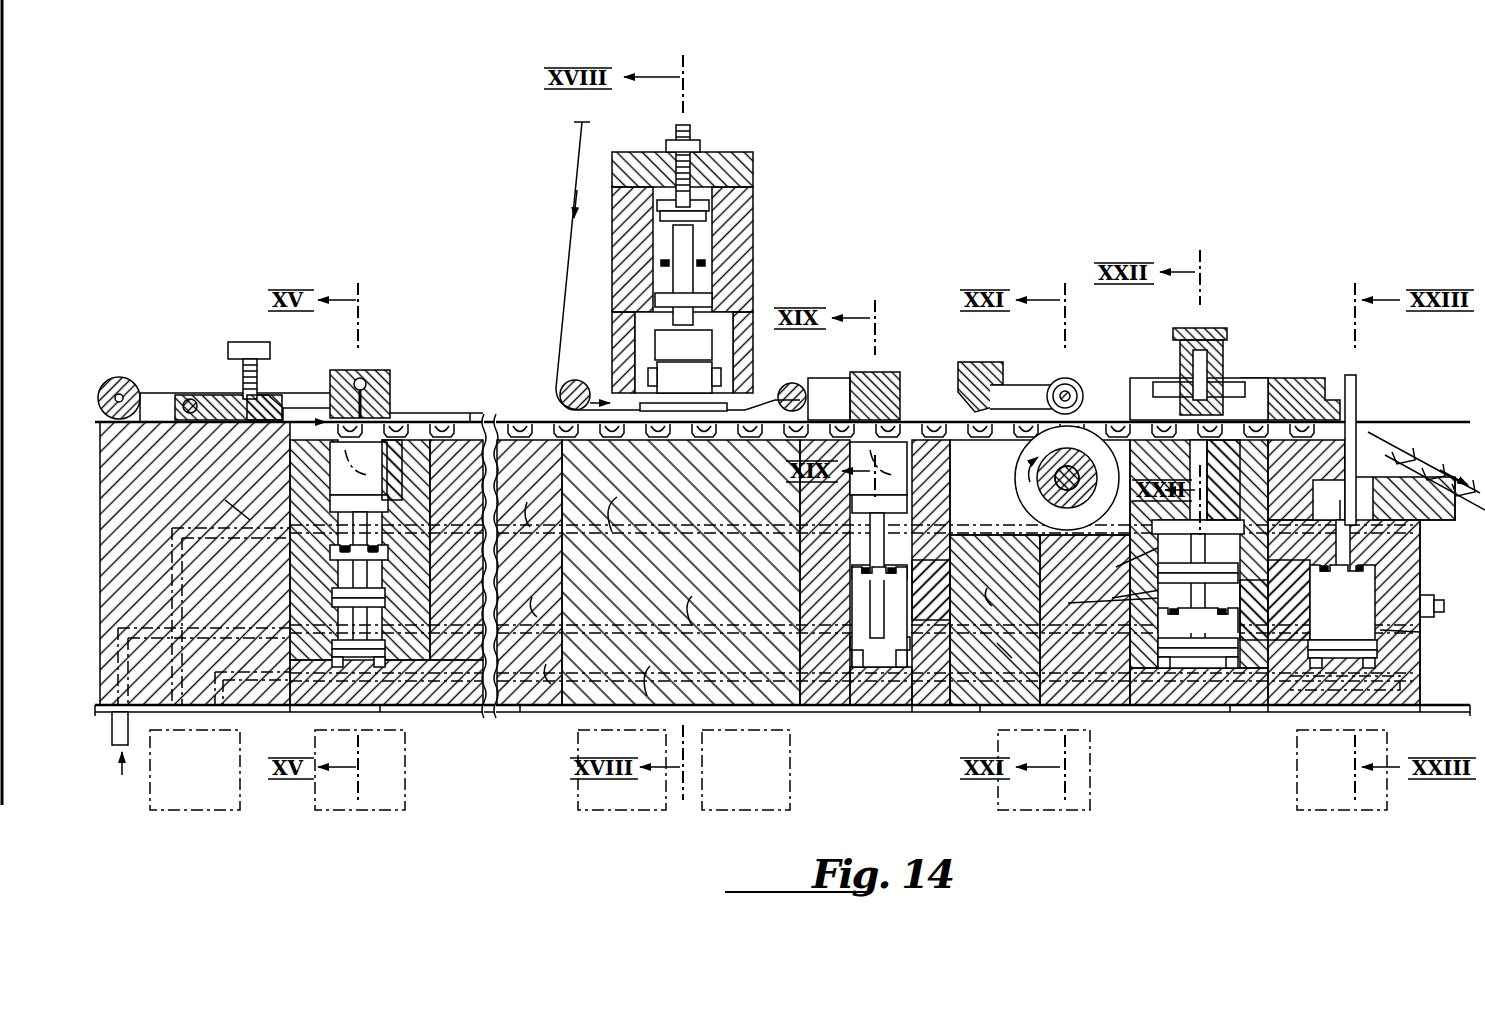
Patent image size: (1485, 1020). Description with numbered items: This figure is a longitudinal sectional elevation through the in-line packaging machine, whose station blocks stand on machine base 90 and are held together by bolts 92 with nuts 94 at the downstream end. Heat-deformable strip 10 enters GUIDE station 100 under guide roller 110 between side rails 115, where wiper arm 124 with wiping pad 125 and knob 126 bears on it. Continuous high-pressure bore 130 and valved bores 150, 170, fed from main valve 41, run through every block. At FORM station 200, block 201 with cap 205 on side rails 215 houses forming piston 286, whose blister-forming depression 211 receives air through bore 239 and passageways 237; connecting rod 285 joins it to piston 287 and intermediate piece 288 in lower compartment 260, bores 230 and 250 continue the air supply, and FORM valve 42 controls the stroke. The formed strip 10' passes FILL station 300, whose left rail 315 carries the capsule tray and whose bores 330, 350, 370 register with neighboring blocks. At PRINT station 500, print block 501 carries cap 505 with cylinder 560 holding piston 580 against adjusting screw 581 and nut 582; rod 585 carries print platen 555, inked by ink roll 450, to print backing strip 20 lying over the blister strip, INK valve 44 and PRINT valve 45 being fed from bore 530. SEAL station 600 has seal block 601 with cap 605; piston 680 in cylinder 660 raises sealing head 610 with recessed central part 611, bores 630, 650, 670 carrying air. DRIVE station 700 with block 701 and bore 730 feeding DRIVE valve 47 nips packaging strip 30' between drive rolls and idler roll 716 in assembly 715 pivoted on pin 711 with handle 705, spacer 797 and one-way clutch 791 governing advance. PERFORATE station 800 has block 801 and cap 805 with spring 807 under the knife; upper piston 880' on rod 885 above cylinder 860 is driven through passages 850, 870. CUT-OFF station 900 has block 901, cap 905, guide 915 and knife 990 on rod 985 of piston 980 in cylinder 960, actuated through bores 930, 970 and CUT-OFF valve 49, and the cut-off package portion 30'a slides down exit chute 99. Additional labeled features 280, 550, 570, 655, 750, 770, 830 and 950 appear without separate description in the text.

The heat-deformable strip 10 is at (235, 375).
The formed blister strip 10' is at (436, 383).
The backing strip 20 is at (561, 289).
The strip 30' is at (1252, 374).
The strip exit 30'a is at (1426, 443).
The main valve 41 is at (195, 810).
The FORM valve 42 is at (385, 810).
The INK valve 44 is at (578, 802).
The PRINT valve 45 is at (747, 813).
The DRIVE valve 47 is at (1090, 790).
The CUT-OFF valve 49 is at (1340, 810).
The machine base 90 is at (529, 712).
The bolts 92 is at (1444, 606).
The nuts 94 is at (1432, 600).
The exit chute 99 is at (1449, 591).
The GUIDE station 100 is at (196, 712).
The guide roller 110 is at (111, 377).
The side rails 115 is at (181, 395).
The wiper arm 124 is at (271, 395).
The wiping pad 125 is at (242, 399).
The knob 126 is at (241, 342).
The continuous high-pressure bore 130 is at (152, 628).
The lower valved high-pressure bore 150 is at (256, 690).
The upper valved high-pressure bore 170 is at (342, 550).
The FORM station 200 is at (426, 712).
The form block 201 is at (411, 712).
The cap 205 is at (372, 372).
The blister-forming depression 211 is at (358, 471).
The side rails 215 is at (309, 400).
The continuous high-pressure bore 230 is at (371, 590).
The upper multiple passageways 237 is at (368, 400).
The bore 239 is at (363, 380).
The valved high-pressure bore 250 is at (298, 712).
The lower compartment 260 is at (336, 580).
The head 280 is at (332, 504).
The connecting rod 285 is at (362, 575).
The forming piston 286 is at (382, 488).
The piston 287 is at (334, 602).
The intermediate piece 288 is at (388, 646).
The FILL station 300 is at (501, 712).
The left rail 315 is at (471, 410).
The continuous high-pressure bore 330 is at (521, 594).
The valved high-pressure bore 350 is at (528, 663).
The valved high-pressure bore 370 is at (519, 501).
The ink roll 450 is at (706, 379).
The PRINT station 500 is at (803, 712).
The print block 501 is at (745, 252).
The cap 505 is at (753, 163).
The continuous high-pressure air bore 530 is at (689, 598).
The passage 550 is at (660, 669).
The print platen 555 is at (701, 336).
The vertical cylinder 560 is at (712, 240).
The passage 570 is at (628, 504).
The piston 580 is at (660, 226).
The adjusting screw 581 is at (691, 129).
The nut 582 is at (701, 146).
The rod 585 is at (665, 292).
The SEAL station 600 is at (893, 712).
The seal block 601 is at (921, 712).
The cap 605 is at (869, 374).
The sealing head 610 is at (853, 504).
The rectangular central part 611 is at (902, 476).
The continuous high-pressure bore 630 is at (930, 622).
The valved high-pressure bore 650 is at (847, 712).
The seal 655 is at (884, 574).
The vertical cylinder 660 is at (852, 602).
The valved high-pressure bore 670 is at (1040, 507).
The piston 680 is at (850, 643).
The DRIVE station 700 is at (1115, 712).
The drive block 701 is at (981, 712).
The handle 705 is at (967, 362).
The pin 711 is at (1008, 390).
The idler roll assembly 715 is at (1026, 385).
The idler roll 716 is at (1071, 380).
The longitudinal bore 730 is at (994, 597).
The passage 750 is at (1015, 647).
The drum 770 is at (964, 522).
The righthand one-way clutch 791 is at (1022, 470).
The spacer 797 is at (1058, 500).
The PERFORATE station 800 is at (1164, 712).
The block 801 is at (1249, 712).
The cap 805 is at (1141, 378).
The spring 807 is at (1180, 402).
The wall 830 is at (1252, 610).
The lower valved air passage 850 is at (1197, 712).
The lower cylinder 860 is at (1276, 553).
The valved air passage 870 is at (1231, 480).
The upper piston 880' is at (1118, 602).
The rod 885 is at (1128, 563).
The CUT-OFF station 900 is at (1287, 712).
The cut-off block 901 is at (1401, 712).
The cap 905 is at (1291, 378).
The guide 915 is at (1358, 386).
The continuous high-pressure bore 930 is at (1289, 600).
The passage 950 is at (1400, 682).
The cylinder 960 is at (1352, 592).
The bore 970 is at (1318, 497).
The piston 980 is at (1380, 647).
The rod 985 is at (1424, 630).
The knife 990 is at (1340, 462).